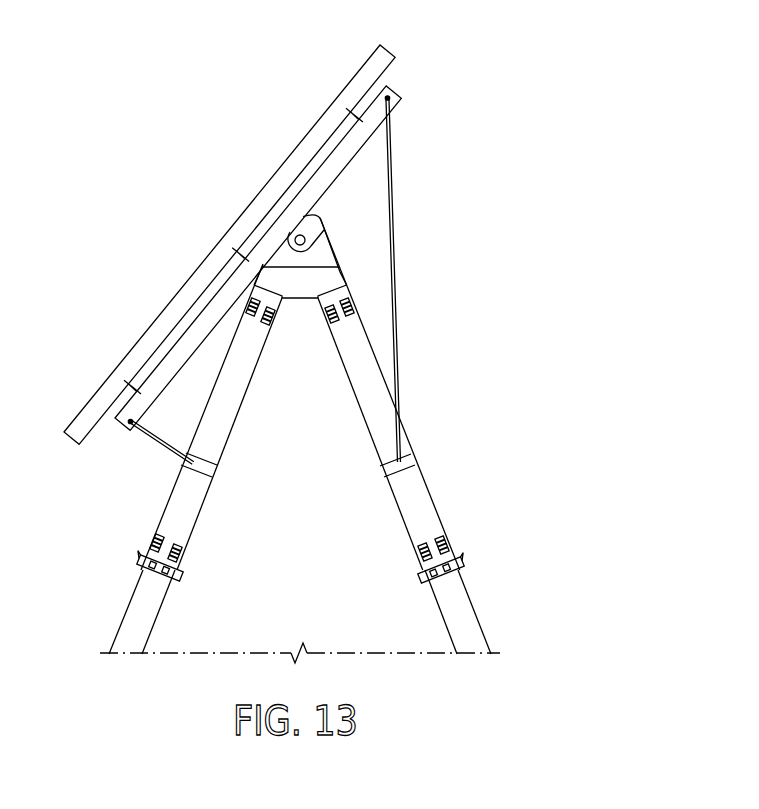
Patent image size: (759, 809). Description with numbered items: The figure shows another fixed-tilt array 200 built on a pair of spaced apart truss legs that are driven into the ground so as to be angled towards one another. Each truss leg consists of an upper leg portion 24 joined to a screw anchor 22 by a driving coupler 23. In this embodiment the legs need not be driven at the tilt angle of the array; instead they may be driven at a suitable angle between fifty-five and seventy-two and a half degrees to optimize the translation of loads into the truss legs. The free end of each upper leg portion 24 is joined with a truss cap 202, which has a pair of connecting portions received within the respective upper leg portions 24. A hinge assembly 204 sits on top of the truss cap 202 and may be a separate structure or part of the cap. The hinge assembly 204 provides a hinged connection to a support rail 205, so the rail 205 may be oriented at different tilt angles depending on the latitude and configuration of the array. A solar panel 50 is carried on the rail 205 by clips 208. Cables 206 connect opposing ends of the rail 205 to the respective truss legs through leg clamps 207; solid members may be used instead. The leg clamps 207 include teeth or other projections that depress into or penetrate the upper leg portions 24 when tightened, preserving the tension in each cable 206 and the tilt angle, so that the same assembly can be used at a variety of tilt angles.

The fixed-tilt array 200 is at (544, 44).
The solar panel 50 is at (75, 416).
The support rail 205 is at (396, 86).
The panel clips 208 is at (355, 110).
The hinge assembly 204 is at (327, 230).
The truss cap 202 is at (345, 277).
The upper leg portion 24 is at (241, 412).
The driving coupler 23 is at (138, 558).
The screw anchor 22 is at (122, 612).
The cable 206 is at (395, 345).
The leg clamp 207 is at (217, 472).